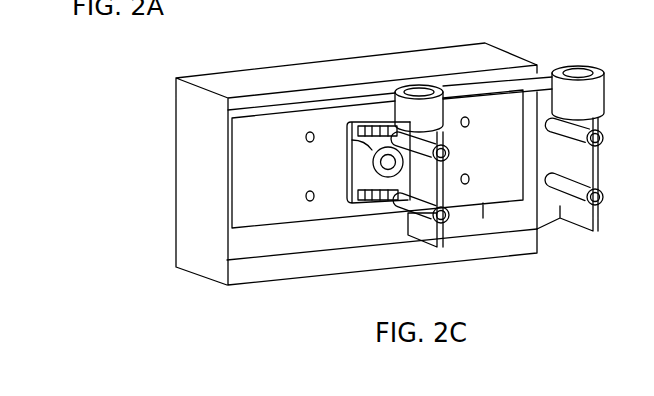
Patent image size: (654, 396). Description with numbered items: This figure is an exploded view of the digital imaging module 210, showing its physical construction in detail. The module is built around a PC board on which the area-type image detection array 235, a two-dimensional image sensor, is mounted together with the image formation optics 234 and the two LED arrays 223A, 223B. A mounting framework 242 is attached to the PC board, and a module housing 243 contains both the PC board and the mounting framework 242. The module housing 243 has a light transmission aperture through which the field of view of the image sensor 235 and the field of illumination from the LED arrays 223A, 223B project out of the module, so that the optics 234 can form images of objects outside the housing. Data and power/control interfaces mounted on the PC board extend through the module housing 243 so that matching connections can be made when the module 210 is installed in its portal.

The digital imaging module 210 is at (165, 147).
The area-type image detection array 235 is at (352, 137).
The image formation optics 234 is at (365, 125).
The LED array 223A is at (383, 134).
The LED array 223B is at (378, 199).
The module housing 243 is at (455, 57).
The mounting framework 242 is at (548, 78).